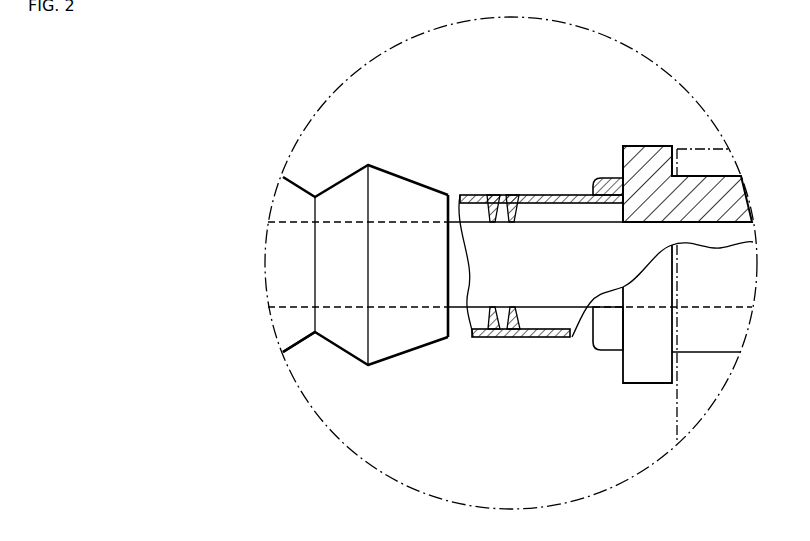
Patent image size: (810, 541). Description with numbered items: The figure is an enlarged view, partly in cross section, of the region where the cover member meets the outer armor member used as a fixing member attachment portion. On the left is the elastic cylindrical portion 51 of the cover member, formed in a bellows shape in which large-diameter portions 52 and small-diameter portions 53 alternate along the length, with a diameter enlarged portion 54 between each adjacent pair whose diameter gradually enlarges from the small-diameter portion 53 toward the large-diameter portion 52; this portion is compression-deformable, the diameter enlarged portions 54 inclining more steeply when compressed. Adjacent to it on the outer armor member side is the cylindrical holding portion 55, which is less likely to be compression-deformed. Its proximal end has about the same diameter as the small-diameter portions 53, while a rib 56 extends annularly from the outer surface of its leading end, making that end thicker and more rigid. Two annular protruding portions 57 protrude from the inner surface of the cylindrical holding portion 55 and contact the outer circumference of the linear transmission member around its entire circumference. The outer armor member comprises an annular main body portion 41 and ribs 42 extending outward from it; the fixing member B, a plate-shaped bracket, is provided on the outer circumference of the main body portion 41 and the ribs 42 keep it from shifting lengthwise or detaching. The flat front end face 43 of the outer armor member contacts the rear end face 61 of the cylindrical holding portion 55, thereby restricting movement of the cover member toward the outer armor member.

The main body portion 41 is at (710, 178).
The rib 42 is at (648, 146).
The front end face 43 is at (618, 222).
The elastic cylindrical portion 51 is at (365, 274).
The large-diameter portion 52 is at (368, 165).
The small-diameter portion 53 is at (315, 196).
The diameter enlarged portion 54 is at (337, 348).
The cylindrical holding portion 55 is at (532, 338).
The rib 56 is at (600, 178).
The annular protruding portion 57 is at (503, 202).
The rear end face 61 is at (623, 153).
The fixing member B is at (705, 148).